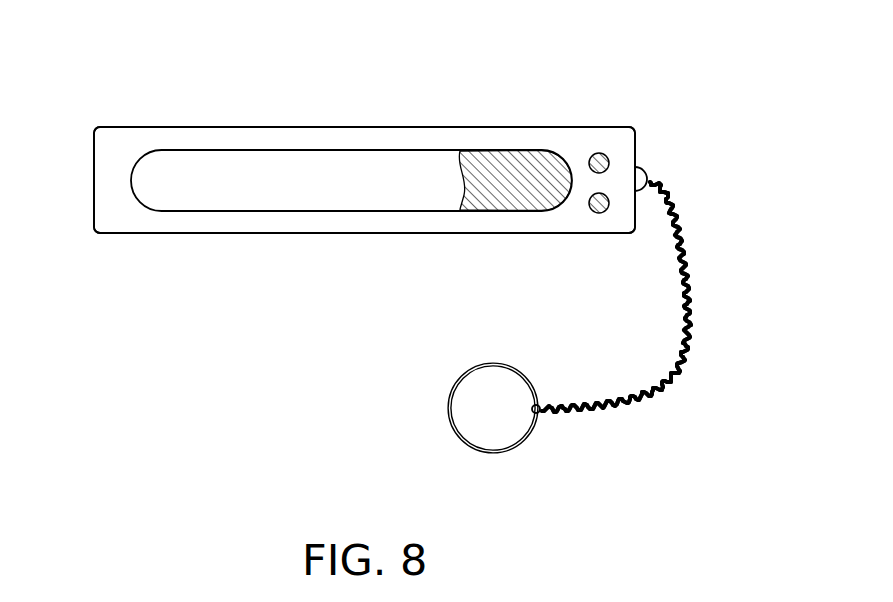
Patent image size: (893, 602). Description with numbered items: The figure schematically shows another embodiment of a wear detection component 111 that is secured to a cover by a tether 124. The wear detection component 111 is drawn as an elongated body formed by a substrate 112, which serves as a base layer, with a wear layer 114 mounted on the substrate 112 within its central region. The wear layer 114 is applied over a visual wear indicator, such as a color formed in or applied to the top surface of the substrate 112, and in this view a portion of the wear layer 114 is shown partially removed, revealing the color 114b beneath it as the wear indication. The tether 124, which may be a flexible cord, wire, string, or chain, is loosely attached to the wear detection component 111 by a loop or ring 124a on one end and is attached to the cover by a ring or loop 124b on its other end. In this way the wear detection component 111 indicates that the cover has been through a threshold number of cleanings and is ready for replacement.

The wear detection component 111 is at (203, 124).
The substrate 112 is at (205, 223).
The wear layer 114 is at (352, 167).
The color 114b is at (502, 167).
The tether 124 is at (695, 260).
The loop or ring 124a is at (647, 172).
The ring or loop 124b is at (450, 407).